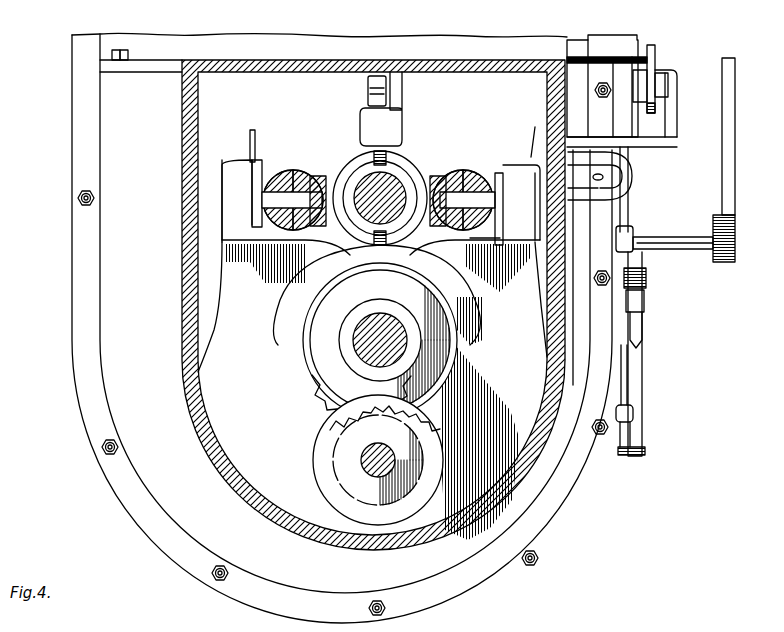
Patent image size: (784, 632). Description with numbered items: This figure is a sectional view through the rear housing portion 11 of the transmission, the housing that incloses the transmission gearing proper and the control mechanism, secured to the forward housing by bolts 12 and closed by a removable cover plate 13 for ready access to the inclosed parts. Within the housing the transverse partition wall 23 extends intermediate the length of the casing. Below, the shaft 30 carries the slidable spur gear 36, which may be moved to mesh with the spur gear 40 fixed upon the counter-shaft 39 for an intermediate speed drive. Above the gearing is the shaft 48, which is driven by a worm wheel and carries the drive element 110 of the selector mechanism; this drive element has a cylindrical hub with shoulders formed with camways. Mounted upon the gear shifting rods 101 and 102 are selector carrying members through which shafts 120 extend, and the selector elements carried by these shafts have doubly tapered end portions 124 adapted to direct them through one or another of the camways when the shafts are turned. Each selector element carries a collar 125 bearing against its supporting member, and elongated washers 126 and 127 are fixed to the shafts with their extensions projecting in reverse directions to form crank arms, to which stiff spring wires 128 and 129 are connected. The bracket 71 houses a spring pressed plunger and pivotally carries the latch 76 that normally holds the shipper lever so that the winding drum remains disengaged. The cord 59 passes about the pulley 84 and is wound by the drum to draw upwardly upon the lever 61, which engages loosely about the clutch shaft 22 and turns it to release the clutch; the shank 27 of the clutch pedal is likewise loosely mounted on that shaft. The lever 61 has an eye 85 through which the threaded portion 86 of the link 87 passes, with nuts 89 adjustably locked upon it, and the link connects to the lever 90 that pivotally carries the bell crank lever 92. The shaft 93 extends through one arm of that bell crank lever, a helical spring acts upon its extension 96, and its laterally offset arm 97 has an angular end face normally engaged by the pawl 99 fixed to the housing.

The rear housing portion 11 is at (207, 452).
The bolts 12 is at (104, 450).
The removable cover plate 13 is at (158, 62).
The transverse shaft 22 is at (700, 250).
The transverse partition wall 23 is at (205, 320).
The shank 27 is at (730, 186).
The shaft 30 is at (370, 336).
The spur gear 36 is at (330, 372).
The counter-shaft 39 is at (368, 458).
The spur gear 40 is at (342, 440).
The shaft 48 is at (382, 190).
The cord 59 is at (660, 385).
The lever 61 is at (638, 368).
The bracket 71 is at (400, 118).
The latch 76 is at (366, 92).
The pulley 84 is at (625, 178).
The eye 85 is at (642, 326).
The threaded portion 86 is at (644, 302).
The link 87 is at (634, 240).
The nuts 89 is at (646, 274).
The lever 90 is at (636, 158).
The bell crank lever 92 is at (655, 50).
The shaft 93 is at (600, 58).
The extension 96 is at (658, 101).
The arm 97 is at (647, 80).
The pawl 99 is at (668, 82).
The gear shifting rod 101 is at (290, 185).
The gear shifting rod 102 is at (476, 188).
The drive element 110 is at (360, 232).
The shafts 120 is at (460, 190).
The doubly tapered end portions 124 is at (410, 235).
The collar 125 is at (318, 180).
The elongated washer 126 is at (256, 184).
The elongated washer 127 is at (492, 238).
The stiff spring wire 128 is at (256, 142).
The stiff spring wire 129 is at (503, 200).